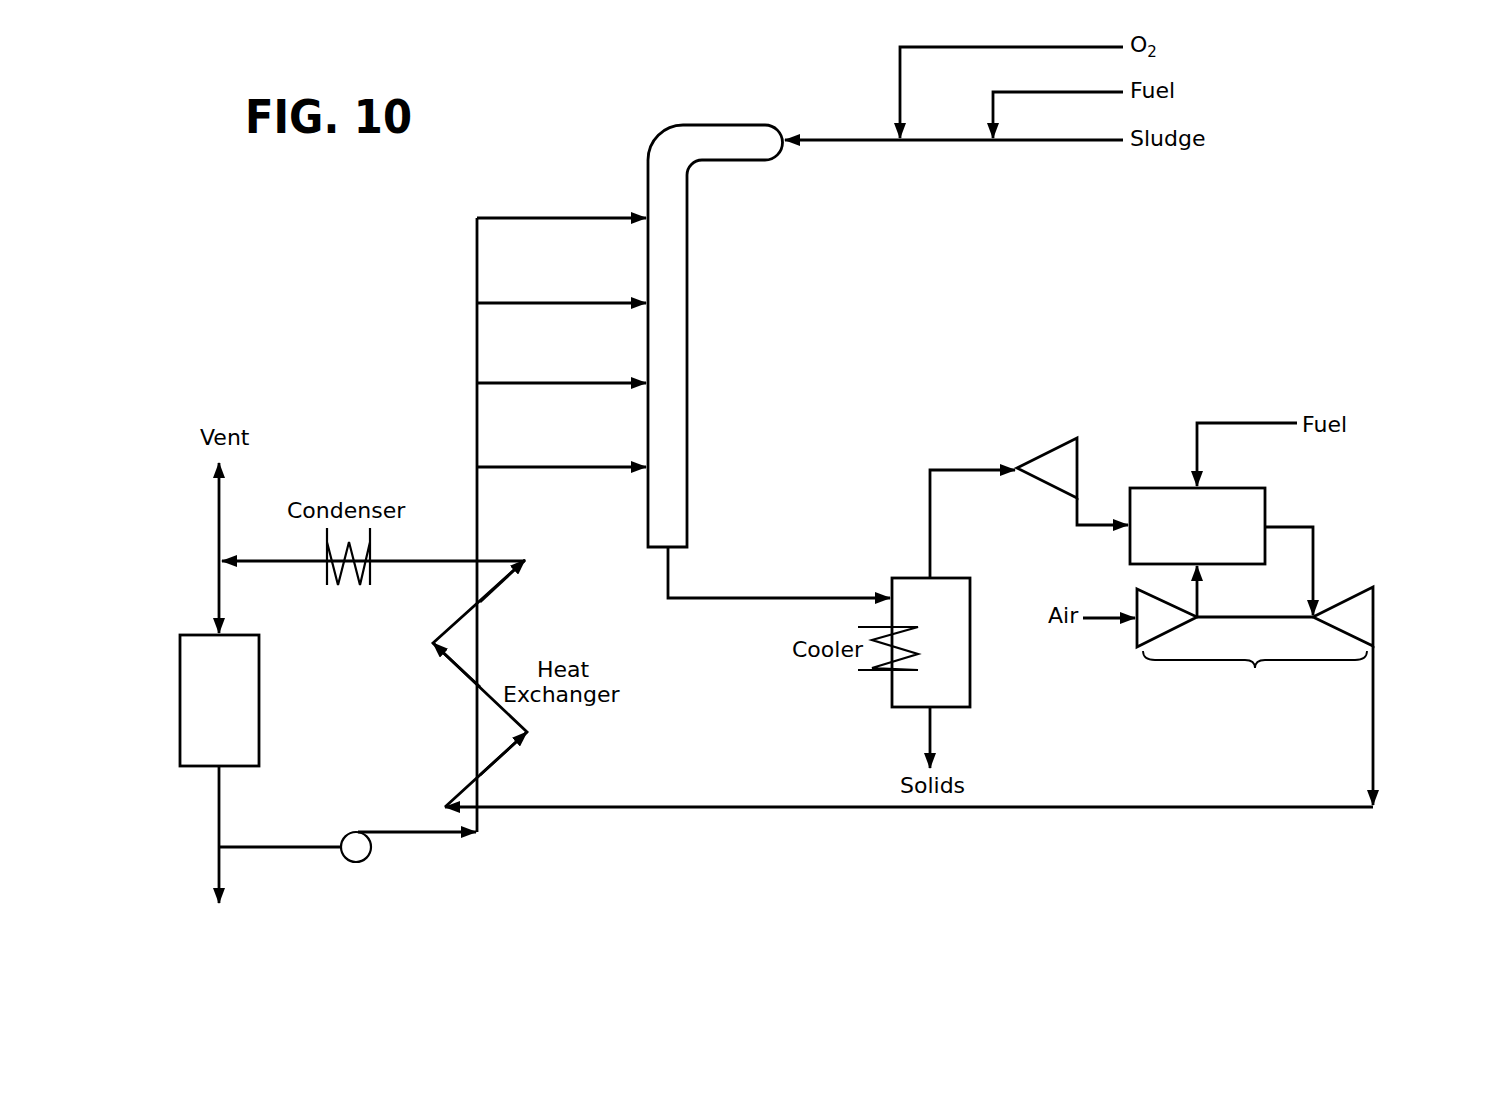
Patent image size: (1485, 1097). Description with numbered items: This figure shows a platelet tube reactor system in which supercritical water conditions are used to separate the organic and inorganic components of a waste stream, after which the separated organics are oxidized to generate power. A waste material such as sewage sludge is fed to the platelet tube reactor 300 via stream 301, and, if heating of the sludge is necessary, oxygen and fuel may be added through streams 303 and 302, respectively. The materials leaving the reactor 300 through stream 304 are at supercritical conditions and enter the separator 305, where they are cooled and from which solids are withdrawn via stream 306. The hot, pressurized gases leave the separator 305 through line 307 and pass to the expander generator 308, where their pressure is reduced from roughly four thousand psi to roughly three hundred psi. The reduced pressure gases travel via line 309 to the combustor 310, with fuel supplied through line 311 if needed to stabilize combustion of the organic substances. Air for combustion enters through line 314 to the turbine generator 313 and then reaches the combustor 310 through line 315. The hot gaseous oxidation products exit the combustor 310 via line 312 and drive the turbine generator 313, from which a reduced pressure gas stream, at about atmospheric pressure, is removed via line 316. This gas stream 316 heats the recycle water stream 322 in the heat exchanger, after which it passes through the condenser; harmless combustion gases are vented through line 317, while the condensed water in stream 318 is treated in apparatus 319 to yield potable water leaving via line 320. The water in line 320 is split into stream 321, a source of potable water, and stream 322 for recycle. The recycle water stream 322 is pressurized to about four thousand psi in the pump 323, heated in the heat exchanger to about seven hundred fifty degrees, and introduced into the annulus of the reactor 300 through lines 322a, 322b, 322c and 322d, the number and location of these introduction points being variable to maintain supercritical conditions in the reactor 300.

The platelet tube reactor 300 is at (705, 330).
The stream 301 is at (1012, 144).
The stream 302 is at (1005, 91).
The stream 303 is at (920, 45).
The stream 304 is at (672, 580).
The separator 305 is at (972, 668).
The stream 306 is at (933, 737).
The line 307 is at (968, 470).
The expander generator 308 is at (1060, 430).
The line 309 is at (1080, 518).
The combustor 310 is at (1274, 477).
The line 311 is at (1240, 423).
The line 312 is at (1315, 552).
The turbine generator 313 is at (1255, 647).
The line 314 is at (1100, 612).
The line 315 is at (1200, 600).
The line 316 is at (1376, 690).
The line 317 is at (217, 520).
The stream 318 is at (217, 588).
The apparatus 319 is at (277, 702).
The line 320 is at (217, 815).
The stream 321 is at (217, 872).
The water stream 322 is at (250, 850).
The line 322a is at (598, 465).
The line 322b is at (598, 380).
The line 322c is at (598, 300).
The line 322d is at (598, 215).
The pump 323 is at (367, 860).